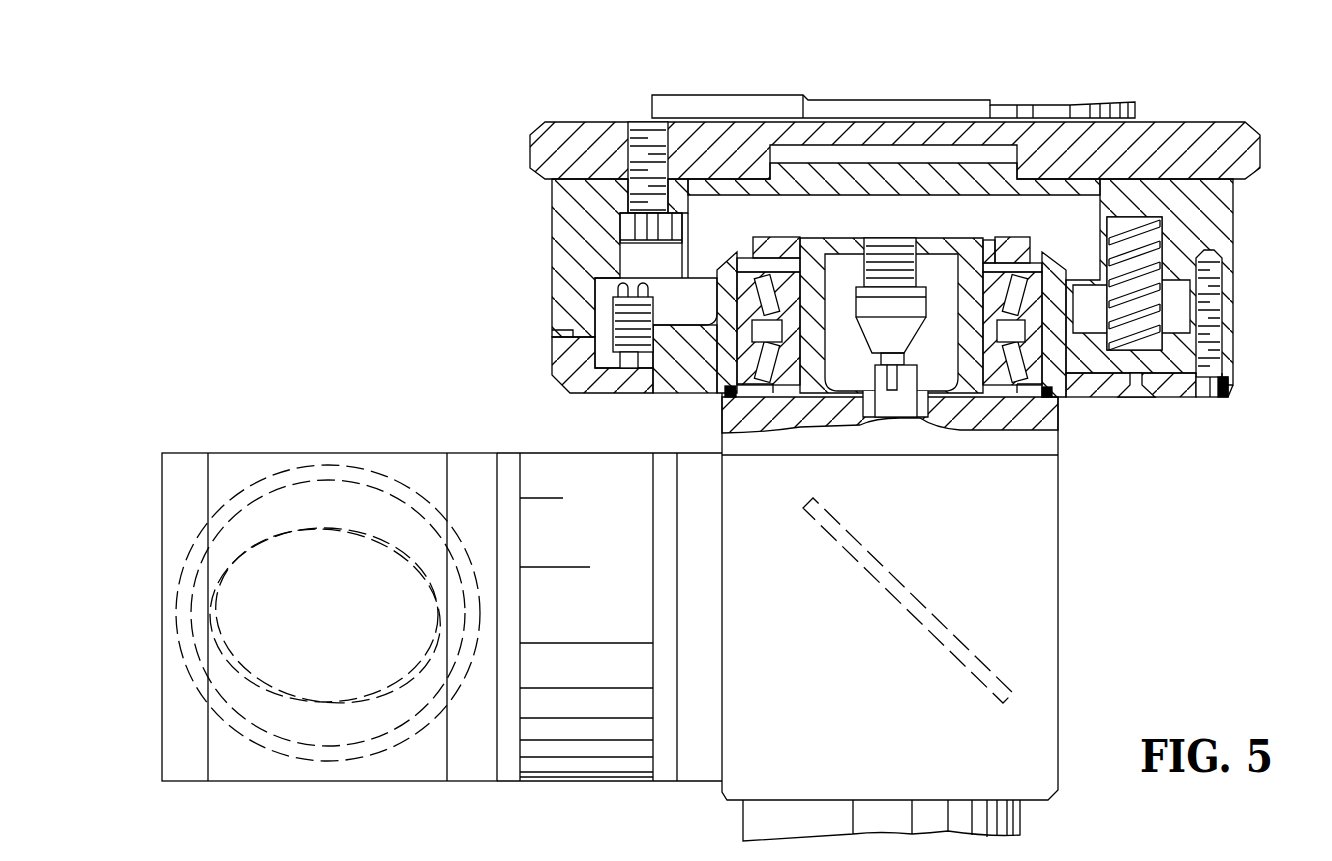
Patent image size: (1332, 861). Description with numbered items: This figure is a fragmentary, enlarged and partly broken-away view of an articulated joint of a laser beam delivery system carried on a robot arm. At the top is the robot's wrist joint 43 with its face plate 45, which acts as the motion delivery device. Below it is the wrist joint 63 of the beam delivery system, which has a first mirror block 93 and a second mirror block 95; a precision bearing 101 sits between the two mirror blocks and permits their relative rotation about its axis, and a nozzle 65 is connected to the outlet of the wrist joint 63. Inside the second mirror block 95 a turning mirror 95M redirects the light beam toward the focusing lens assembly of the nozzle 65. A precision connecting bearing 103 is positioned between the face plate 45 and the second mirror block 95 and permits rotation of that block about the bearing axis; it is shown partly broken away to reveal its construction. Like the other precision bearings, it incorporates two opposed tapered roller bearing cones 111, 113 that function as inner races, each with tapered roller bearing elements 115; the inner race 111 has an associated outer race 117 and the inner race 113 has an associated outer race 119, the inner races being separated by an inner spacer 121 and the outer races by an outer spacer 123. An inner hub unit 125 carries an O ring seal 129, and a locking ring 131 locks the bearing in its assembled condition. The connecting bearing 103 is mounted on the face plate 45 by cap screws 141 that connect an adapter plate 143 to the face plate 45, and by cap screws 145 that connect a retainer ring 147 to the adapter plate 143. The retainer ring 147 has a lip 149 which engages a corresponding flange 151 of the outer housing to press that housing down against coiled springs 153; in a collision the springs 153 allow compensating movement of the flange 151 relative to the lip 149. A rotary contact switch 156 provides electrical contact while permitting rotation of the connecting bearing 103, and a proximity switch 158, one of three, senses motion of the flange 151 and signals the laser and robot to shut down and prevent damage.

The wrist joint 43 is at (1140, 110).
The face plate 45 is at (1262, 160).
The wrist joint 63 is at (1108, 678).
The nozzle 65 is at (743, 812).
The first mirror block 93 is at (320, 452).
The second mirror block 95 is at (1058, 535).
The turning mirror 95M is at (984, 657).
The precision bearing 101 is at (580, 453).
The precision connecting bearing 103 is at (498, 264).
The bearing cone 111 is at (990, 368).
The bearing cone 113 is at (963, 298).
The tapered roller bearing elements 115 is at (728, 389).
The outer race 117 is at (1066, 385).
The outer race 119 is at (1054, 285).
The inner spacer 121 is at (985, 344).
The outer spacer 123 is at (1040, 322).
The inner hub unit 125 is at (985, 245).
The O ring seal 129 is at (1062, 402).
The locking ring 131 is at (1000, 243).
The cap screws 141 is at (648, 122).
The adapter plate 143 is at (550, 200).
The cap screws 145 is at (1232, 397).
The retainer ring 147 is at (1235, 358).
The lip 149 is at (1152, 398).
The flange 151 is at (1222, 340).
The coiled springs 153 is at (1168, 247).
The rotary contact switch 156 is at (900, 218).
The proximity switch 158 is at (612, 355).